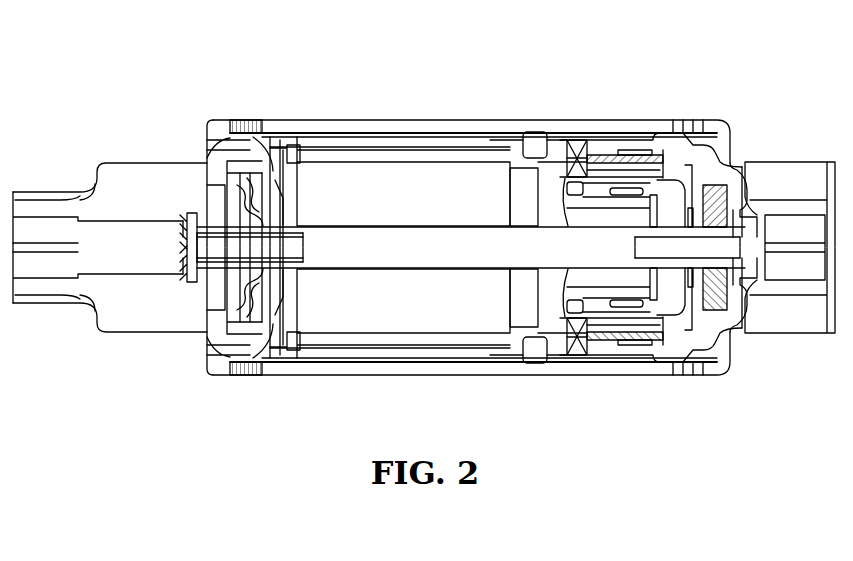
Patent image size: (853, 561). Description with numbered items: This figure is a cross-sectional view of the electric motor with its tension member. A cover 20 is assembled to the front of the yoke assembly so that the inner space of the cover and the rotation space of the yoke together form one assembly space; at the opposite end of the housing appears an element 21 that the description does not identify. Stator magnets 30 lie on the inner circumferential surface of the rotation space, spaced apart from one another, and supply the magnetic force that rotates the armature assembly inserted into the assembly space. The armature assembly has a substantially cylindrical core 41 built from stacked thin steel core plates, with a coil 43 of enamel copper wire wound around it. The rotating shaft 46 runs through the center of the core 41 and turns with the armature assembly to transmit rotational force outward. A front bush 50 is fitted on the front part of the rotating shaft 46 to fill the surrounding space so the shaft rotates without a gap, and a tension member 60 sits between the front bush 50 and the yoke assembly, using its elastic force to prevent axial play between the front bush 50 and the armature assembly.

The cover 20 is at (218, 120).
The end cap 21 is at (615, 120).
The stator magnet 30 is at (407, 353).
The core 41 is at (410, 158).
The coil 43 is at (523, 190).
The rotating shaft 46 is at (597, 250).
The front bush 50 is at (217, 197).
The tension member 60 is at (248, 135).